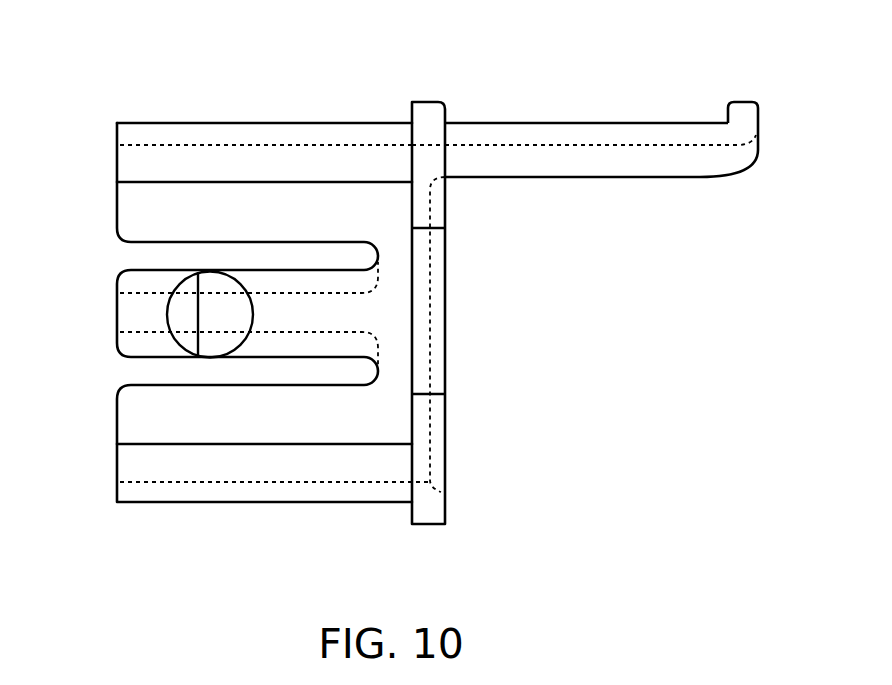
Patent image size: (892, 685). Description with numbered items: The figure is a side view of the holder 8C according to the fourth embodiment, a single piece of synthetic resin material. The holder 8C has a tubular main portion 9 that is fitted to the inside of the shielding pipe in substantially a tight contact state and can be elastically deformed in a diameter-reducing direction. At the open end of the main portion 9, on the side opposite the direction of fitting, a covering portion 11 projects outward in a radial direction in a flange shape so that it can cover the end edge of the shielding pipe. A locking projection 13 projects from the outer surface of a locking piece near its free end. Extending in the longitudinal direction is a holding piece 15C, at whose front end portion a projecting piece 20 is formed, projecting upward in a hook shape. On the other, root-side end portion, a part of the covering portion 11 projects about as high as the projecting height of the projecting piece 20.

The main portion 9 is at (218, 468).
The covering portion 11 is at (418, 100).
The locking projection 13 is at (210, 317).
The holding piece 15C is at (647, 165).
The projecting piece 20 is at (750, 110).
The holder 8C is at (537, 294).